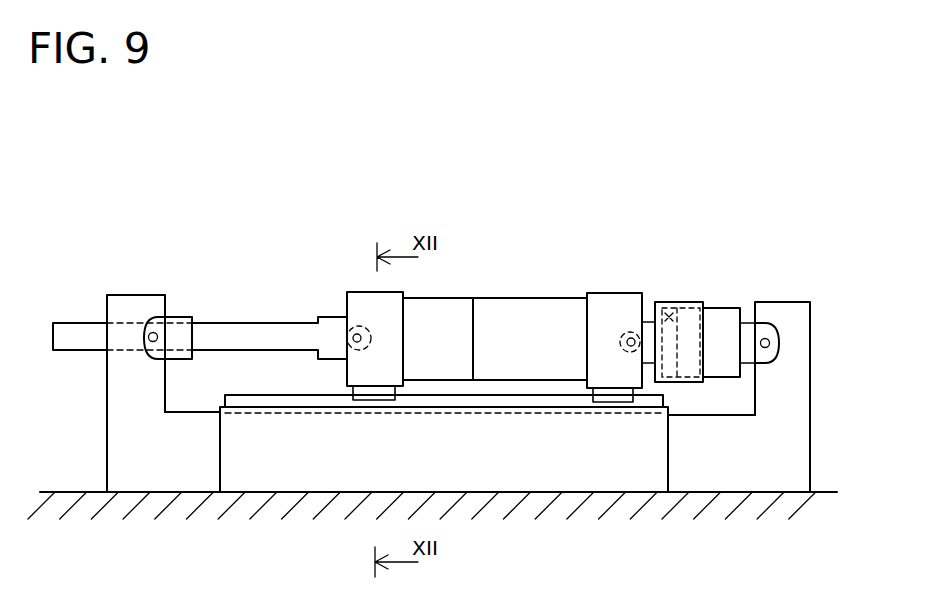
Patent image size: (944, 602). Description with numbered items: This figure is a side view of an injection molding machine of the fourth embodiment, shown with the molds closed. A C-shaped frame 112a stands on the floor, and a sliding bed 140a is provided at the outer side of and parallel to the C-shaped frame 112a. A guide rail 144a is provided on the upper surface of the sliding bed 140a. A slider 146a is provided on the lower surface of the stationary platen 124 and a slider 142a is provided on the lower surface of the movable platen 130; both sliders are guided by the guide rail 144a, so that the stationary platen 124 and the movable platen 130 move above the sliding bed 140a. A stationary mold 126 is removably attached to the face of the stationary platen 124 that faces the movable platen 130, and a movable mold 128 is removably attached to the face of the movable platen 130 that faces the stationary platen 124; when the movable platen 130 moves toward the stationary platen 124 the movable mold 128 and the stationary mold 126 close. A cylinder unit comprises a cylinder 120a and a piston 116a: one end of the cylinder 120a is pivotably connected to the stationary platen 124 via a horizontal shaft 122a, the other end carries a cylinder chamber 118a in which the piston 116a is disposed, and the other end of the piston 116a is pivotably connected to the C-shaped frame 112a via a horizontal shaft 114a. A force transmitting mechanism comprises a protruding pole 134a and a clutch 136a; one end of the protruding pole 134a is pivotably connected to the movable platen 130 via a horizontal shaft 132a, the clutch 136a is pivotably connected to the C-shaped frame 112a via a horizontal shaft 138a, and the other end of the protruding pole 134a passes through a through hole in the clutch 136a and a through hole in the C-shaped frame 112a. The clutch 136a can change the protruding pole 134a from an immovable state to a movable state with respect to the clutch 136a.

The C-shaped frame 112a is at (810, 369).
The horizontal shaft 114a is at (766, 338).
The piston 116a is at (718, 308).
The cylinder chamber 118a is at (671, 312).
The cylinder 120a is at (667, 312).
The horizontal shaft 122a is at (630, 332).
The stationary platen 124 is at (592, 293).
The stationary mold 126 is at (528, 298).
The movable mold 128 is at (448, 298).
The movable platen 130 is at (356, 325).
The horizontal shaft 132a is at (352, 325).
The protruding pole 134a is at (255, 323).
The clutch 136a is at (178, 317).
The horizontal shaft 138a is at (155, 332).
The sliding bed 140a is at (218, 452).
The slider 142a is at (353, 396).
The guide rail 144a is at (218, 397).
The slider 146a is at (633, 395).